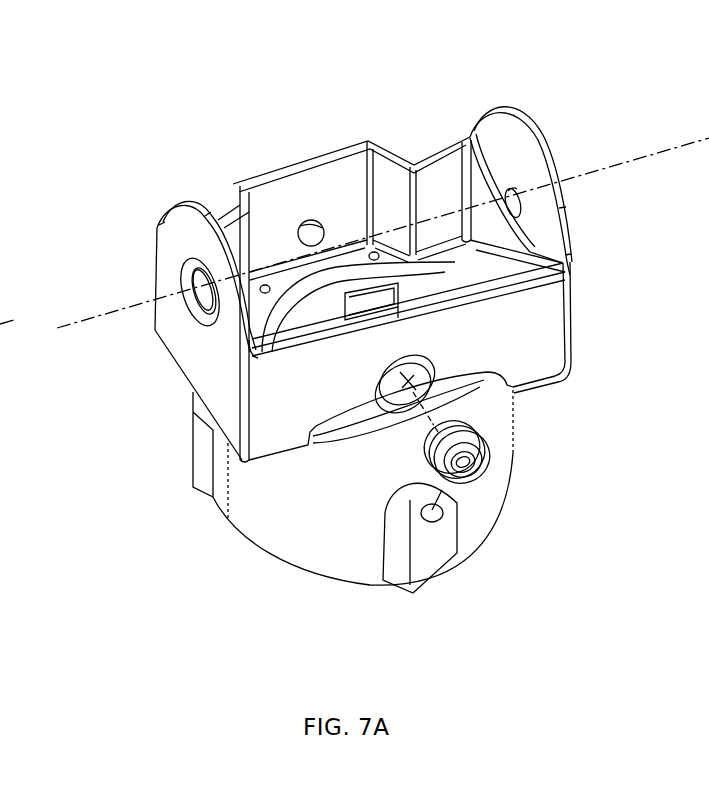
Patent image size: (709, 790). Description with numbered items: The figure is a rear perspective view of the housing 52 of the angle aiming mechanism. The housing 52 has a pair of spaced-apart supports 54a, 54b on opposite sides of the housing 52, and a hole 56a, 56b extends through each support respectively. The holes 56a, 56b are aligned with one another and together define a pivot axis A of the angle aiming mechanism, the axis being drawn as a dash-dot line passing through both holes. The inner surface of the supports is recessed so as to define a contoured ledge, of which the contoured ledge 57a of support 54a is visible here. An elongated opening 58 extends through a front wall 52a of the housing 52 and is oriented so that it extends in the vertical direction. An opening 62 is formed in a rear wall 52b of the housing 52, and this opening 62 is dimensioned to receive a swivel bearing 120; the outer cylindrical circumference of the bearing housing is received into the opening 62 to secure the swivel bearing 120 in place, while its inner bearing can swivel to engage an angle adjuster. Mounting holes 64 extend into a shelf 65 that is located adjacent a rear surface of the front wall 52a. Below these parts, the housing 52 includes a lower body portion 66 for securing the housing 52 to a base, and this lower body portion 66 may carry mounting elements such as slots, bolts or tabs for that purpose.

The housing 52 is at (207, 93).
The front wall 52a is at (307, 221).
The rear wall 52b is at (503, 345).
The support 54a is at (515, 118).
The support 54b is at (166, 220).
The hole 56a is at (510, 186).
The hole 56b is at (185, 277).
The contoured ledge 57a is at (520, 247).
The elongated opening 58 is at (280, 220).
The opening 62 is at (380, 400).
The mounting holes 64 is at (369, 259).
The shelf 65 is at (352, 257).
The lower body portion 66 is at (247, 492).
The swivel bearing 120 is at (492, 432).
The pivot axis A is at (70, 334).